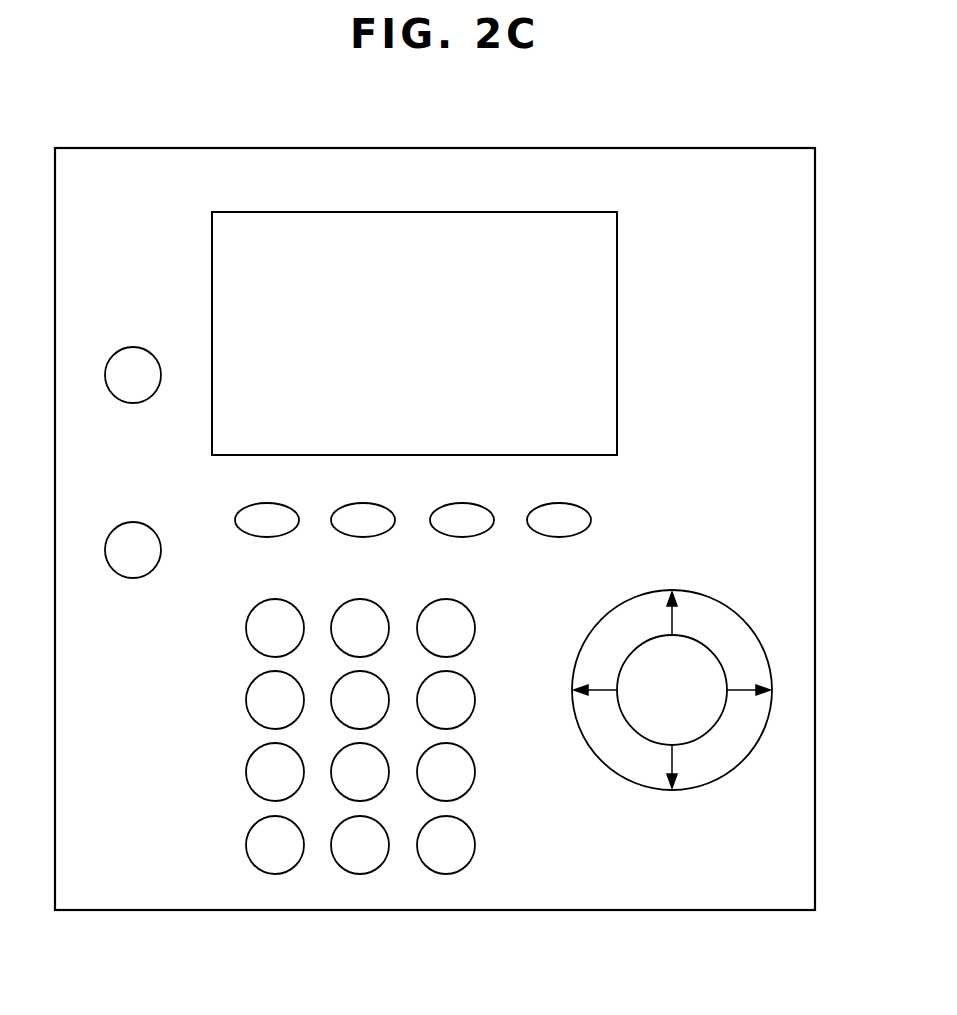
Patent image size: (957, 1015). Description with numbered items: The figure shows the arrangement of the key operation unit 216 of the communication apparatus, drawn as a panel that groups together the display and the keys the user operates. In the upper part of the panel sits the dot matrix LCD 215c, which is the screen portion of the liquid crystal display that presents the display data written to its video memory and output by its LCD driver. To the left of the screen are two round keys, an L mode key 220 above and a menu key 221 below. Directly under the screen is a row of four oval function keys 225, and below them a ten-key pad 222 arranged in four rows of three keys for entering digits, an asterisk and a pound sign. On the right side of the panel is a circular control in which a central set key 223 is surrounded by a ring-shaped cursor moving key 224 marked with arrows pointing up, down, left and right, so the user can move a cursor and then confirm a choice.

The dot matrix LCD 215c is at (617, 275).
The key operation unit 216 is at (686, 462).
The L mode key 220 is at (133, 403).
The menu key 221 is at (133, 578).
The ten-key pad 222 is at (240, 598).
The set key 223 is at (637, 735).
The cursor moving key 224 is at (718, 618).
The function keys 225 is at (591, 534).